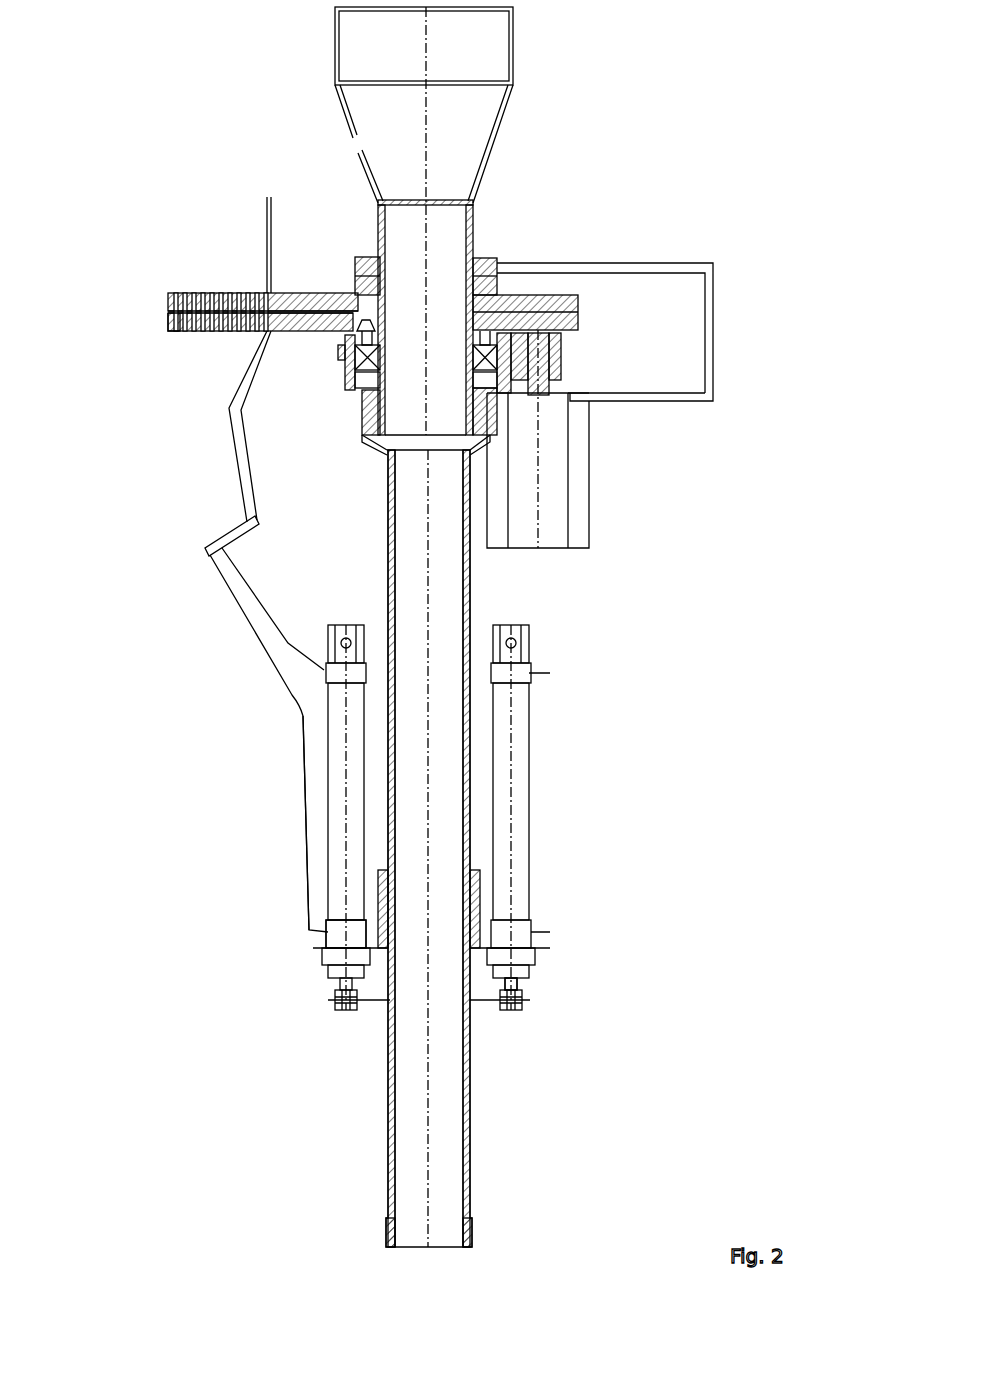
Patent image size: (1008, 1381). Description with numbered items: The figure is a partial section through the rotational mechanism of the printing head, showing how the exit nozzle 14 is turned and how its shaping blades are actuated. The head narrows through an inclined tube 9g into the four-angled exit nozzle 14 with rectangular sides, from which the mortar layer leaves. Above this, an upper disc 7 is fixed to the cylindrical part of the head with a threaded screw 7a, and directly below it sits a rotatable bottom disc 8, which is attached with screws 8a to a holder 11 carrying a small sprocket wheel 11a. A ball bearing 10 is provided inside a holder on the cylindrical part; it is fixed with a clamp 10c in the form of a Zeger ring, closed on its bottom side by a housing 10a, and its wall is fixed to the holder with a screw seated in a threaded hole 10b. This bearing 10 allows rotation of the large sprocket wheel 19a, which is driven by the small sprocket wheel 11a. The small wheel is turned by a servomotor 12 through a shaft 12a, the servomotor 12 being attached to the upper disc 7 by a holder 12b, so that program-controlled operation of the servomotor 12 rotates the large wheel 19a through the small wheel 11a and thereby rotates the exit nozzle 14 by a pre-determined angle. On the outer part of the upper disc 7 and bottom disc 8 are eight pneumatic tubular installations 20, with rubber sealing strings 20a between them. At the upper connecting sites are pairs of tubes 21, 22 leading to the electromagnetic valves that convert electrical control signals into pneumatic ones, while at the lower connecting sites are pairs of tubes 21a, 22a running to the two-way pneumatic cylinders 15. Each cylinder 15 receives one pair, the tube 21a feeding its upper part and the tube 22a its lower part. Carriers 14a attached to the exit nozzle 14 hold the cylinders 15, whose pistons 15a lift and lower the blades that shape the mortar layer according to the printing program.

The upper disc 7 is at (498, 263).
The threaded screw 7a is at (372, 258).
The bottom disc 8 is at (545, 310).
The screws 8a is at (340, 338).
The inclined tube 9g is at (486, 448).
The ball bearing 10 is at (350, 290).
The housing 10a is at (365, 437).
The threaded hole 10b is at (345, 362).
The clamp 10c is at (383, 365).
The holder of the small sprocket wheel 11 is at (557, 365).
The small sprocket wheel 11a is at (567, 349).
The servomotor 12 is at (555, 470).
The shaft 12a is at (715, 265).
The holder 12b is at (545, 383).
The exit nozzle 14 is at (413, 1149).
The carriers 14a is at (480, 903).
The pneumatic cylinder 15 is at (527, 815).
The piston 15a is at (520, 982).
The large sprocket wheel 19a is at (337, 358).
The pneumatic tubular installations 20 is at (219, 274).
The rubber sealing strings 20a is at (170, 318).
The tube 21 is at (266, 552).
The tube 21a is at (322, 673).
The tube 22 is at (258, 293).
The tube 22a is at (345, 915).